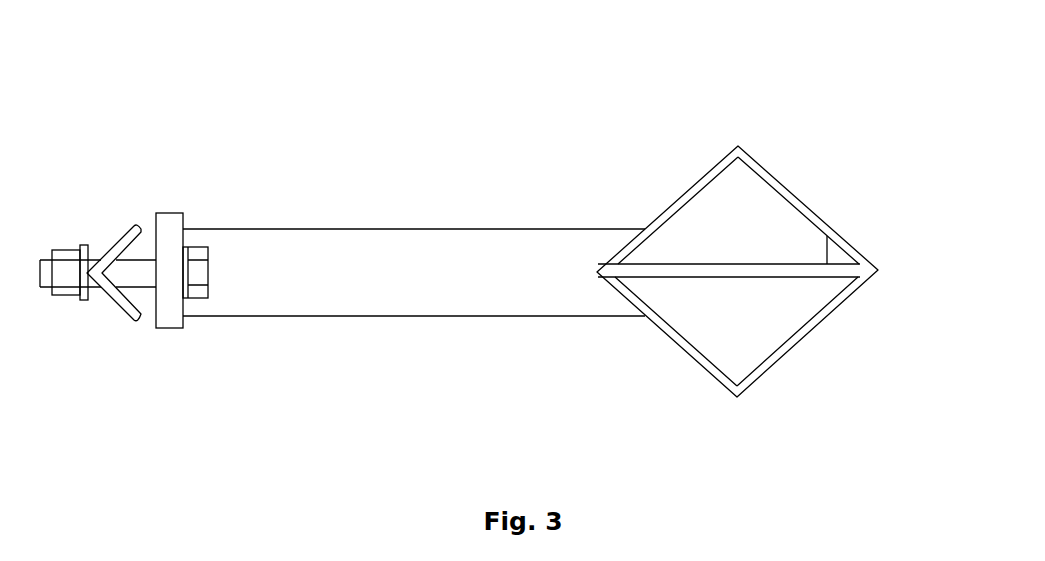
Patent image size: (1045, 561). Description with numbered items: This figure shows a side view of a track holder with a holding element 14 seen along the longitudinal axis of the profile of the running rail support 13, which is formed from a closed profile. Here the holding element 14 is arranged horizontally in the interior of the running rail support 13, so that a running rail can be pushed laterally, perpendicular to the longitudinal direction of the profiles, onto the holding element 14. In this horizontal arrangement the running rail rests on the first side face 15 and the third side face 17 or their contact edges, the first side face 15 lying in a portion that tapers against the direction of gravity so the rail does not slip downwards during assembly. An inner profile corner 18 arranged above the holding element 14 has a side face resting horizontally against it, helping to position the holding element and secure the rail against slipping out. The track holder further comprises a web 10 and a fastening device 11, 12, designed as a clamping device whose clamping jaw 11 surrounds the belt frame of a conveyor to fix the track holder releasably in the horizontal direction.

The web 10 is at (413, 257).
The clamping jaw 11 is at (165, 240).
The fastening device 12 is at (117, 242).
The running rail support 13 is at (736, 148).
The holding element 14 is at (762, 265).
The first side face 15 is at (863, 272).
The third side face 17 is at (597, 272).
The inner profile corner 18 is at (831, 256).